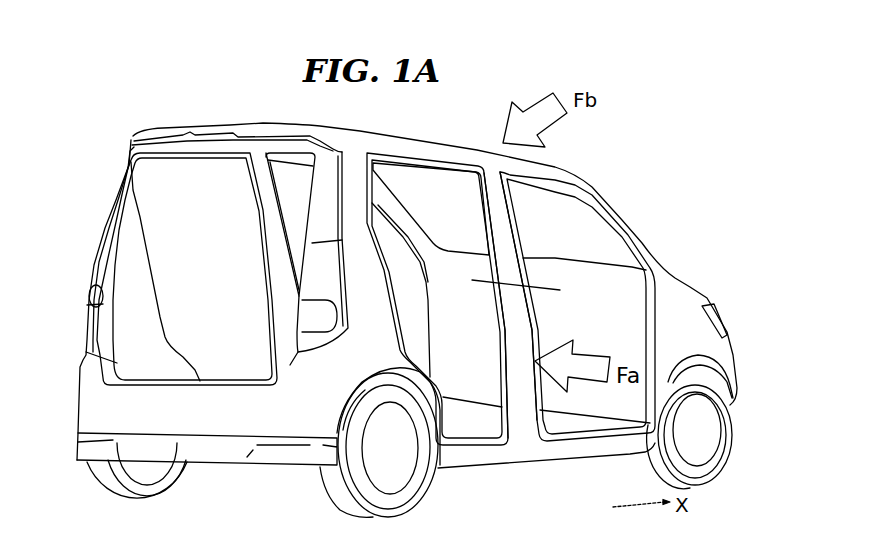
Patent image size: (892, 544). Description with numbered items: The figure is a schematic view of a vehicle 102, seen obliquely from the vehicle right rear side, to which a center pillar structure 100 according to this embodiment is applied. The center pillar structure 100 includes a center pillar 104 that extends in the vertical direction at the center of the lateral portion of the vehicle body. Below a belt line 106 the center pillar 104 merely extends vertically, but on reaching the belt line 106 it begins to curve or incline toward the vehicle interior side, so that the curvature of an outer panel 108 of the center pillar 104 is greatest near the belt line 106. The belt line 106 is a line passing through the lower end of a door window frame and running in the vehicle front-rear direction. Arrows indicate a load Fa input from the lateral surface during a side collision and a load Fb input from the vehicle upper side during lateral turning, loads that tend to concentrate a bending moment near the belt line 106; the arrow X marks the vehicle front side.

The center pillar structure 100 is at (496, 360).
The vehicle 102 is at (470, 118).
The center pillar 104 is at (507, 227).
The belt line 106 is at (545, 287).
The outer panel 108 is at (526, 351).